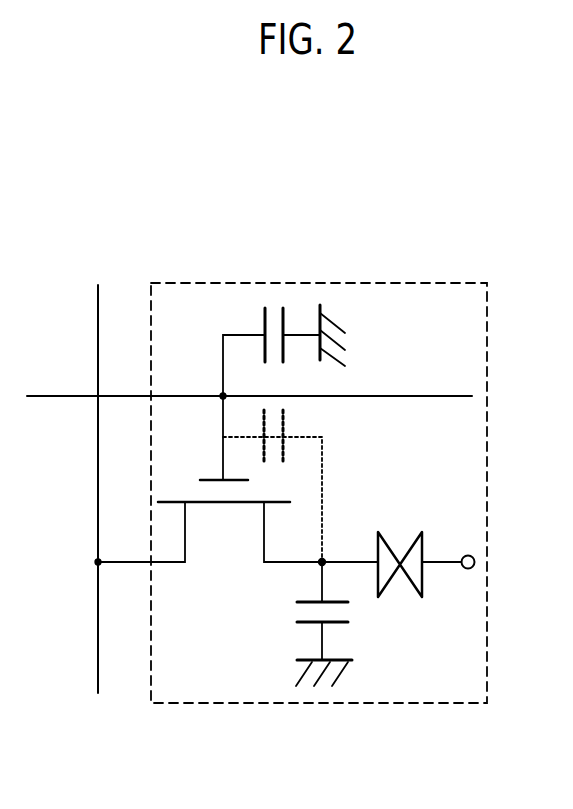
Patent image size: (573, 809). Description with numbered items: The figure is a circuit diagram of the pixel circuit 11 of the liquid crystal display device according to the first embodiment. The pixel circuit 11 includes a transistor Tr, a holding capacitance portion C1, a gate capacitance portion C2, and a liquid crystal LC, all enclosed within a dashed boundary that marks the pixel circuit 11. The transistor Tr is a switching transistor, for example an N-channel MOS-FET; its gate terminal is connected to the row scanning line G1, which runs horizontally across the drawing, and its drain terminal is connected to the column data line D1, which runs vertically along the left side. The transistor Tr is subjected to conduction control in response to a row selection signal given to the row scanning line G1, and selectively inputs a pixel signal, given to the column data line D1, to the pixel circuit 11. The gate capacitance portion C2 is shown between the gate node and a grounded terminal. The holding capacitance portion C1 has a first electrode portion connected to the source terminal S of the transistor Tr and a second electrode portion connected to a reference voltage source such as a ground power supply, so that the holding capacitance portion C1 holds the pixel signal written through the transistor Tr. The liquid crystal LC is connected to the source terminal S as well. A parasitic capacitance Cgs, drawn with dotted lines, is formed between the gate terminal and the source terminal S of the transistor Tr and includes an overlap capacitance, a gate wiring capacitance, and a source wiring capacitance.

The pixel circuit 11 is at (310, 283).
The column data line D1 is at (98, 335).
The row scanning line G1 is at (48, 398).
The gate capacitance portion C2 is at (265, 322).
The transistor Tr is at (224, 563).
The parasitic capacitance Cgs is at (322, 439).
The source terminal S is at (323, 562).
The liquid crystal LC is at (396, 534).
The holding capacitance portion C1 is at (352, 613).